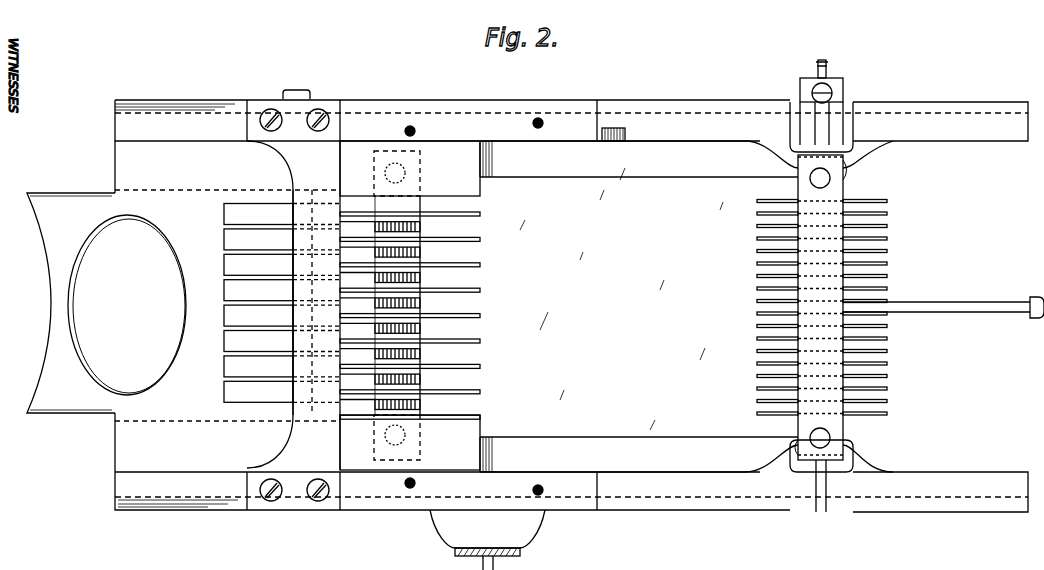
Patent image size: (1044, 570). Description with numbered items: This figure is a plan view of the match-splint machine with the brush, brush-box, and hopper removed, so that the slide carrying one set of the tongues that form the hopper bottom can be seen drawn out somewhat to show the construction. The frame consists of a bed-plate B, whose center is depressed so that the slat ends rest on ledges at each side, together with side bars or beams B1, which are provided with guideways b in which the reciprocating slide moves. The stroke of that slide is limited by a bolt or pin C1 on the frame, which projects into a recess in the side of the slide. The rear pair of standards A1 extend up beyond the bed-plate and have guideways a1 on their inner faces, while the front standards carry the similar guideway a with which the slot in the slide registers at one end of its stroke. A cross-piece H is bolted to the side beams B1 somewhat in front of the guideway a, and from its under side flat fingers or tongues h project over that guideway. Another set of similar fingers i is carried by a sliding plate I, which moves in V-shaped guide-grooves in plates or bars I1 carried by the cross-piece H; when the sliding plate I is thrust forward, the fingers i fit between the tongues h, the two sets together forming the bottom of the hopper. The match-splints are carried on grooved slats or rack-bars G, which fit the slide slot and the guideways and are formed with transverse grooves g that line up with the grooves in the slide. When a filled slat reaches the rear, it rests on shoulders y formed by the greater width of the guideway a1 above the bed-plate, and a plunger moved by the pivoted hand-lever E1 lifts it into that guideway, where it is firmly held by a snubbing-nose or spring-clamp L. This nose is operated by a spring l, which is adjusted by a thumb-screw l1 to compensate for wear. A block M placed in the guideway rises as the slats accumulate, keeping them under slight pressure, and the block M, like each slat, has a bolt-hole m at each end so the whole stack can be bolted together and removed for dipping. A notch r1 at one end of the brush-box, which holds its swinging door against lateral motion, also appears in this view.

The side bar B1 is at (571, 306).
The guideway b is at (571, 306).
The bolt or pin C1 is at (294, 288).
The guide plate or bar I1 is at (297, 306).
The sliding plate I is at (112, 303).
The finger or tongue i is at (291, 308).
The cross-piece H is at (316, 305).
The finger or tongue h is at (417, 314).
The slat or rack-bar G is at (421, 329).
The transverse groove g is at (421, 353).
The bed-plate B is at (661, 355).
The notch r1 is at (613, 127).
The rear standard A1 is at (835, 295).
The guideway a1 is at (810, 148).
The snubbing-nose or spring-clamp L is at (834, 93).
The spring l is at (836, 79).
The thumb-screw l1 is at (819, 61).
The block M is at (822, 307).
The bolt-hole m is at (819, 308).
The shoulder y is at (845, 176).
The hand-lever E1 is at (943, 300).
The guideway a is at (809, 486).